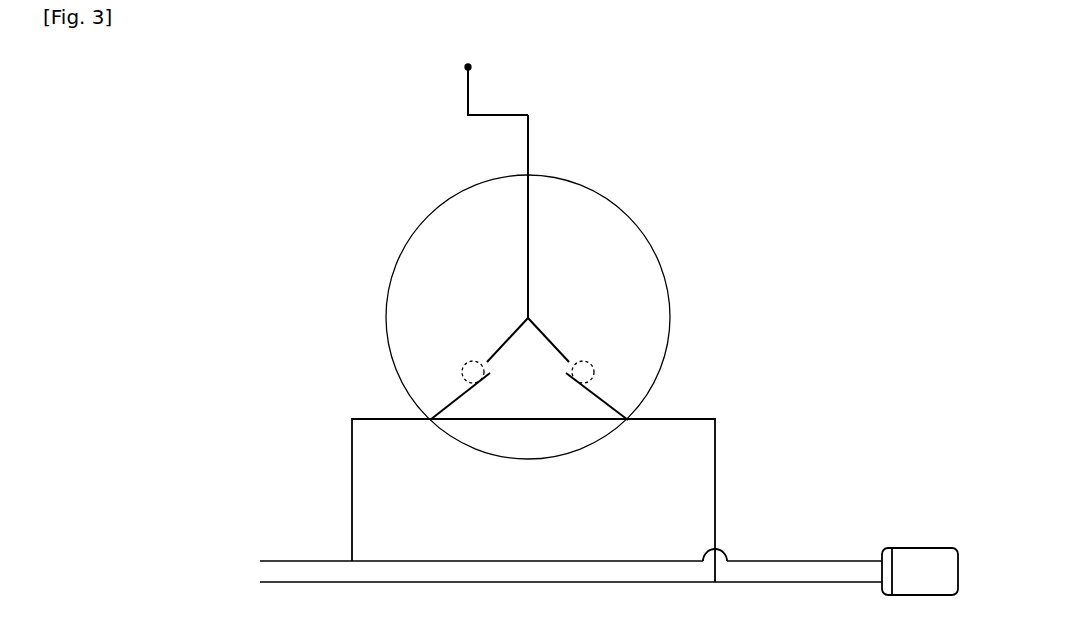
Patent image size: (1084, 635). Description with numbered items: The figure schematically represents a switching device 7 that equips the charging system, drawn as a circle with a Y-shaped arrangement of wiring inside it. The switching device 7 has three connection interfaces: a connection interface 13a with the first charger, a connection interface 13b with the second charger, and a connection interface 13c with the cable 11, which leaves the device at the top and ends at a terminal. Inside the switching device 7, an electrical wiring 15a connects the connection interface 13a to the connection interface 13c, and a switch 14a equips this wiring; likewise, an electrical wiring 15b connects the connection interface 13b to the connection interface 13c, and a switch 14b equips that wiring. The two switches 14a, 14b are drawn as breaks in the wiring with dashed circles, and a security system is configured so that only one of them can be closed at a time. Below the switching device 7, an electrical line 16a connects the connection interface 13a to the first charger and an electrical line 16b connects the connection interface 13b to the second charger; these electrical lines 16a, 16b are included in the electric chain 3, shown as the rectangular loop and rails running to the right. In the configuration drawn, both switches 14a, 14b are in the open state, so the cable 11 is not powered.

The electric chain 3 is at (914, 552).
The switching device 7 is at (613, 238).
The cable 11 is at (492, 117).
The connection interface 13a is at (429, 422).
The connection interface 13b is at (628, 422).
The connection interface 13c is at (531, 170).
The switch 14a is at (463, 368).
The switch 14b is at (593, 364).
The electrical wiring 15a is at (438, 408).
The electrical wiring 15b is at (618, 408).
The electrical line 16a is at (351, 490).
The electrical line 16b is at (716, 476).